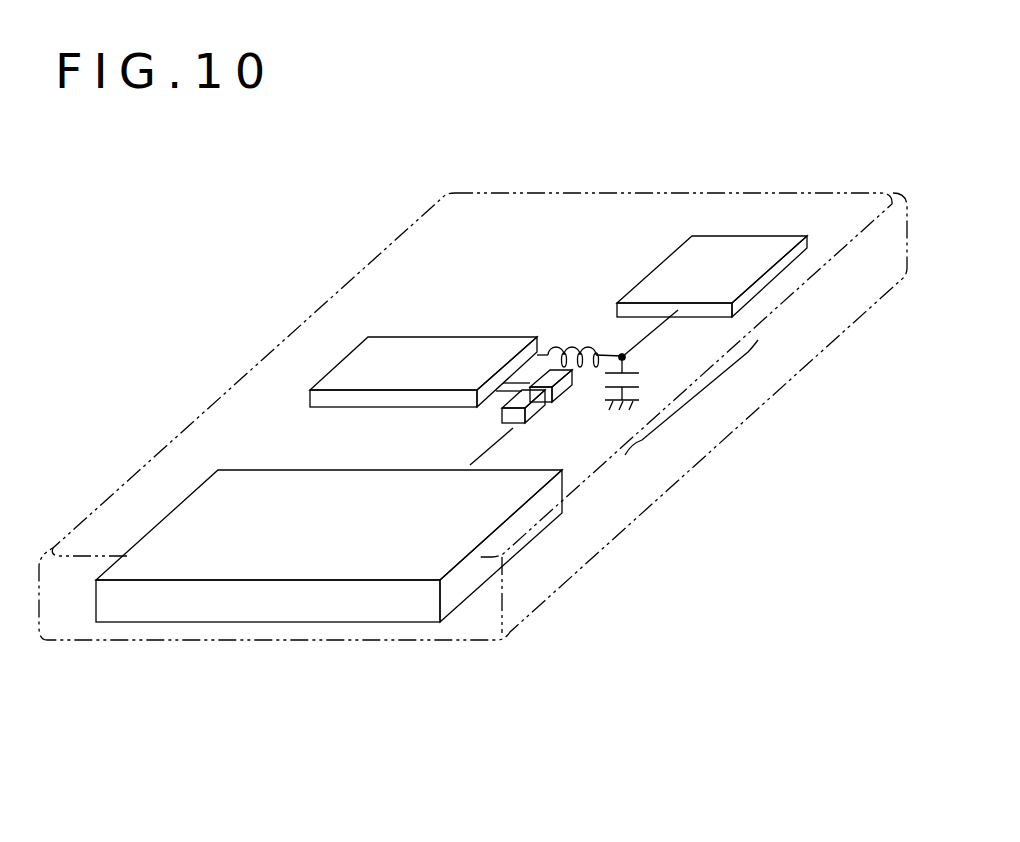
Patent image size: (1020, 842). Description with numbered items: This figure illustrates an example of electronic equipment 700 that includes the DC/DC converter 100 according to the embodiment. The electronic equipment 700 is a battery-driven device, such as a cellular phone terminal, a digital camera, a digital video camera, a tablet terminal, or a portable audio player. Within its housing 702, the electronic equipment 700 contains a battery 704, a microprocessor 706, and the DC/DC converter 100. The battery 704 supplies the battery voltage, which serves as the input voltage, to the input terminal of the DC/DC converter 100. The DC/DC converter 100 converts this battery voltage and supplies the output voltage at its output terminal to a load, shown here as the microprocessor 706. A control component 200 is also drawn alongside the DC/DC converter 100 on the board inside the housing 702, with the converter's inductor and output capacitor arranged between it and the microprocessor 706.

The electronic equipment 700 is at (497, 790).
The housing 702 is at (735, 193).
The battery 704 is at (134, 593).
The microprocessor 706 is at (683, 260).
The control IC 200 is at (392, 353).
The DC/DC converter 100 is at (711, 390).